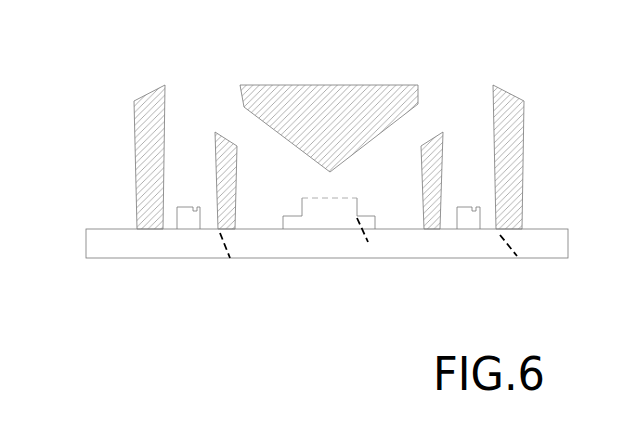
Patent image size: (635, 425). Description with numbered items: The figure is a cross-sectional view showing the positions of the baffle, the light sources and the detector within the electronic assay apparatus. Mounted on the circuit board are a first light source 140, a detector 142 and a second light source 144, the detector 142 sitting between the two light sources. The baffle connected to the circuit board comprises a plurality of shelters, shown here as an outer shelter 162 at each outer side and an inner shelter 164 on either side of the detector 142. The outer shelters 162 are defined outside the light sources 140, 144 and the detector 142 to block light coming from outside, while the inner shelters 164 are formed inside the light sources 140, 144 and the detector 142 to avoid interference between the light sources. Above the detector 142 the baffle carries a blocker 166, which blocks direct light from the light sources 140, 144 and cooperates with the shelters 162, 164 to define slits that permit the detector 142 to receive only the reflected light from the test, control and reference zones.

The first light source 140 is at (470, 222).
The detector 142 is at (328, 205).
The second light source 144 is at (188, 222).
The outer shelter 162 is at (136, 115).
The inner shelter 164 is at (223, 152).
The blocker 166 is at (313, 117).